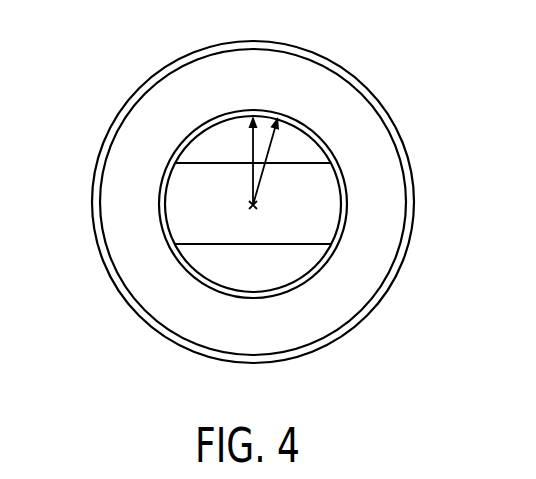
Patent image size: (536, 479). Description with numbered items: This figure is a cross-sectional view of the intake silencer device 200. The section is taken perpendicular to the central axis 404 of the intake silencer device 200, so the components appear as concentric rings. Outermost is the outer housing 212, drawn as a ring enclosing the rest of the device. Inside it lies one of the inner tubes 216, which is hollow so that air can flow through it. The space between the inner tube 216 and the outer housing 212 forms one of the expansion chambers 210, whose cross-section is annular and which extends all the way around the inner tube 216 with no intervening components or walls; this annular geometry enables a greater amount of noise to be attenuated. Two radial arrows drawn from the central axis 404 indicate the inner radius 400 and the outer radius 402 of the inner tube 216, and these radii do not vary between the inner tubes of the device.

The intake silencer device 200 is at (82, 72).
The outer housing 212 is at (187, 58).
The inner tube 216 is at (182, 138).
The expansion chamber 210 is at (268, 96).
The inner radius 400 is at (252, 194).
The outer radius 402 is at (258, 191).
The central axis 404 is at (260, 206).